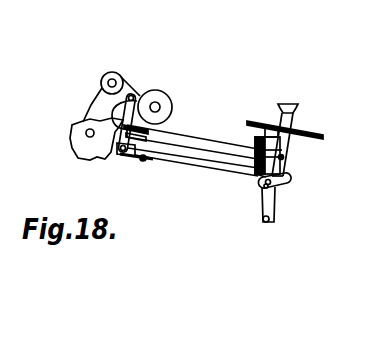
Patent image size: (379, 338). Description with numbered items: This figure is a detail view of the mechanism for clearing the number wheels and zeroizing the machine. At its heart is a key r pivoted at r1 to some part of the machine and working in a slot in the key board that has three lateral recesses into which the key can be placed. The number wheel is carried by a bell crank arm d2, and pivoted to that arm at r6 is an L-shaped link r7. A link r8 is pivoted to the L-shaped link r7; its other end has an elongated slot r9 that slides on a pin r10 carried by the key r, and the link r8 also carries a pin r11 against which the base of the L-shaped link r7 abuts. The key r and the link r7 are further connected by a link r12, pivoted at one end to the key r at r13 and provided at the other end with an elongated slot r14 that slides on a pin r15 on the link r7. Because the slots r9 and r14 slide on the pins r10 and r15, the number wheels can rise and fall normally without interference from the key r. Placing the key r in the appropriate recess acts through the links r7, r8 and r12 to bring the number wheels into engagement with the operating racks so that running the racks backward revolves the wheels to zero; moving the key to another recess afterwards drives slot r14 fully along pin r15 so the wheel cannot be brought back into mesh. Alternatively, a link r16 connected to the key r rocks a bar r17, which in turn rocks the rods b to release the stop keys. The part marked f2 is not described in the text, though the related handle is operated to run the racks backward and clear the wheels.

The frame part f2 is at (185, 2).
The L-shaped link r7 is at (110, 103).
The pivot r6 is at (133, 96).
The elongated slot r14 is at (168, 119).
The pin r15 is at (130, 128).
The bell crank arm d2 is at (86, 145).
The link r12 is at (202, 139).
The link r8 is at (175, 163).
The pin r11 is at (143, 160).
The bar r17 is at (256, 140).
The key r is at (290, 104).
The rods b is at (298, 137).
The pivot r13 is at (282, 157).
The link r16 is at (260, 173).
The elongated slot r9 is at (285, 185).
The pin r10 is at (265, 186).
The pivot r1 is at (268, 222).